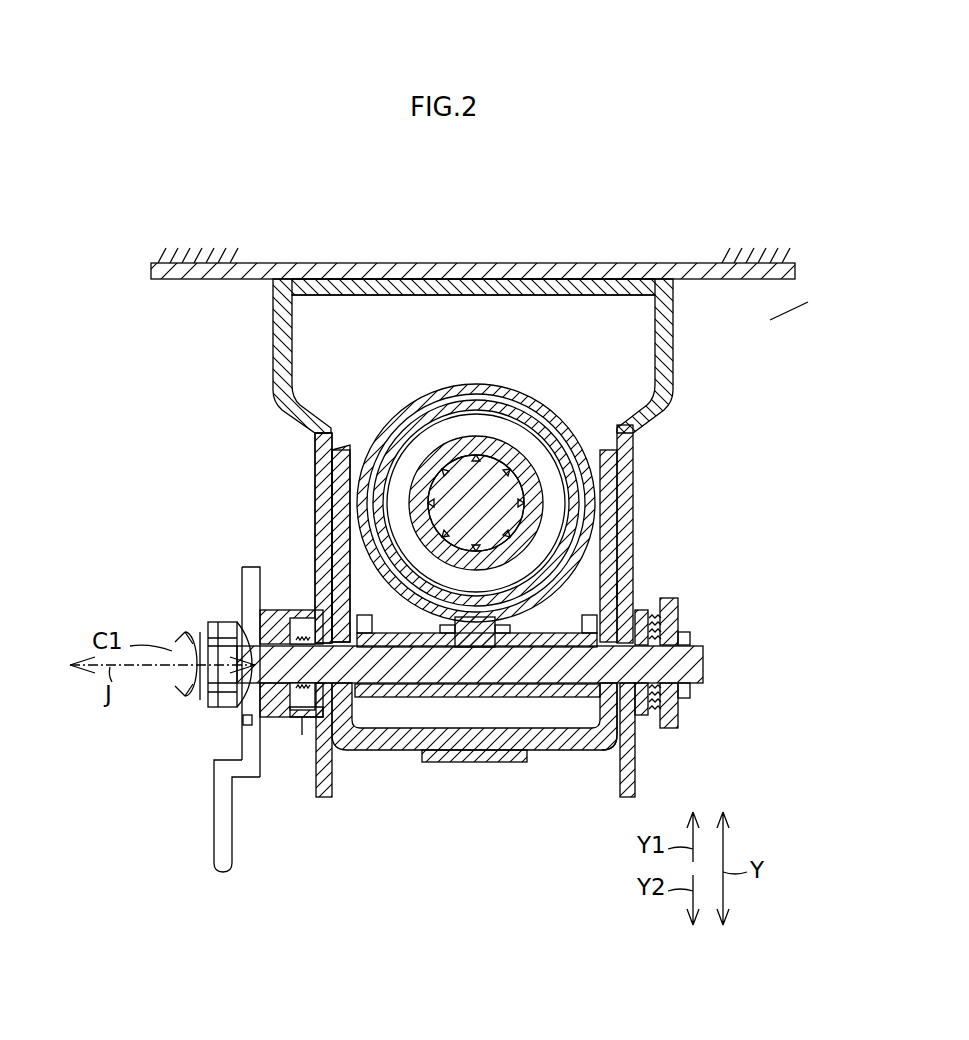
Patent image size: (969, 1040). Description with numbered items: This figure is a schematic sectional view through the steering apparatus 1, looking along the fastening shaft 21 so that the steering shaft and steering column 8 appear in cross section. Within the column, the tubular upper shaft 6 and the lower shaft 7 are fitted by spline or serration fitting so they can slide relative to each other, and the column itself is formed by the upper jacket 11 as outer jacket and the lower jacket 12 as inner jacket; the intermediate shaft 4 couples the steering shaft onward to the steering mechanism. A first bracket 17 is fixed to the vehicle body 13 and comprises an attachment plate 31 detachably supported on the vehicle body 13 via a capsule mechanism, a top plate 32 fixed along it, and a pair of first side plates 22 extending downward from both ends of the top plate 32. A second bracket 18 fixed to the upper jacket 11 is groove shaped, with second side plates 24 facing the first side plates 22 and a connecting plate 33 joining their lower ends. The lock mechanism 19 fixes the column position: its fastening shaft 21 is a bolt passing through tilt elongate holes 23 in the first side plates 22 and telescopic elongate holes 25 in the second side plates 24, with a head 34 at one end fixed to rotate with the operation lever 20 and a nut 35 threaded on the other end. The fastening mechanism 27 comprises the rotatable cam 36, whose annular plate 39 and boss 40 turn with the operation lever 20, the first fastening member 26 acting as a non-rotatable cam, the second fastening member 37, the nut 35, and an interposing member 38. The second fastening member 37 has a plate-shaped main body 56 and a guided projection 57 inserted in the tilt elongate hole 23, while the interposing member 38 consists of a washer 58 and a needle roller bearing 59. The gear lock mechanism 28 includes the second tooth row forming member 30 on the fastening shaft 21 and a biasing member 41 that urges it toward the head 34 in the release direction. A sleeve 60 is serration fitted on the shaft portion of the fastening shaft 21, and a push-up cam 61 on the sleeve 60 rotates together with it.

The steering apparatus 1 is at (770, 320).
The intermediate shaft 4 is at (546, 503).
The upper shaft 6 is at (525, 458).
The lower shaft 7 is at (505, 493).
The steering column 8 is at (273, 527).
The upper jacket 11 is at (316, 439).
The lower jacket 12 is at (348, 455).
The vehicle body 13 is at (200, 262).
The first bracket 17 is at (678, 378).
The second bracket 18 is at (628, 505).
The lock mechanism 19 is at (200, 630).
The operation lever 20 is at (222, 840).
The fastening shaft 21 is at (422, 685).
The first side plate 22 is at (318, 492).
The tilt elongate hole 23 is at (322, 582).
The second side plate 24 is at (340, 520).
The telescopic elongate hole 25 is at (340, 735).
The first fastening member 26 is at (272, 606).
The fastening mechanism 27 is at (218, 614).
The gear lock mechanism 28 is at (305, 736).
The second tooth row forming member 30 is at (296, 720).
The attachment plate 31 is at (535, 263).
The top plate 32 is at (418, 296).
The connecting plate 33 is at (548, 751).
The head 34 is at (222, 622).
The nut 35 is at (690, 690).
The rotatable cam 36 is at (303, 596).
The second fastening member 37 is at (643, 608).
The interposing member 38 is at (723, 613).
The annular plate 39 is at (245, 725).
The boss 40 is at (238, 704).
The biasing member 41 is at (358, 627).
The main body 56 is at (678, 712).
The guided projection 57 is at (618, 732).
The washer 58 is at (680, 610).
The needle roller bearing 59 is at (688, 640).
The sleeve 60 is at (460, 698).
The push-up cam 61 is at (480, 648).